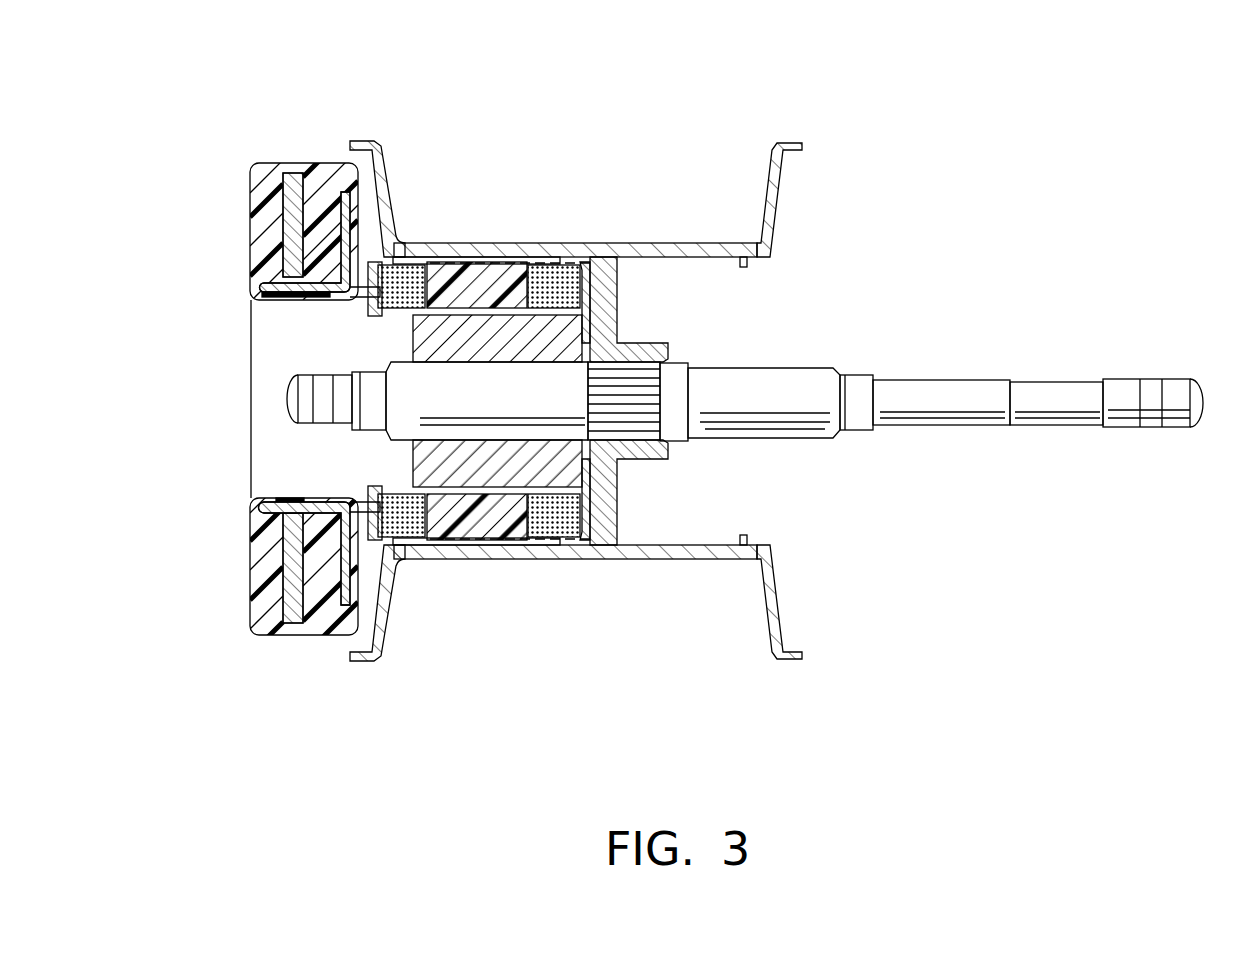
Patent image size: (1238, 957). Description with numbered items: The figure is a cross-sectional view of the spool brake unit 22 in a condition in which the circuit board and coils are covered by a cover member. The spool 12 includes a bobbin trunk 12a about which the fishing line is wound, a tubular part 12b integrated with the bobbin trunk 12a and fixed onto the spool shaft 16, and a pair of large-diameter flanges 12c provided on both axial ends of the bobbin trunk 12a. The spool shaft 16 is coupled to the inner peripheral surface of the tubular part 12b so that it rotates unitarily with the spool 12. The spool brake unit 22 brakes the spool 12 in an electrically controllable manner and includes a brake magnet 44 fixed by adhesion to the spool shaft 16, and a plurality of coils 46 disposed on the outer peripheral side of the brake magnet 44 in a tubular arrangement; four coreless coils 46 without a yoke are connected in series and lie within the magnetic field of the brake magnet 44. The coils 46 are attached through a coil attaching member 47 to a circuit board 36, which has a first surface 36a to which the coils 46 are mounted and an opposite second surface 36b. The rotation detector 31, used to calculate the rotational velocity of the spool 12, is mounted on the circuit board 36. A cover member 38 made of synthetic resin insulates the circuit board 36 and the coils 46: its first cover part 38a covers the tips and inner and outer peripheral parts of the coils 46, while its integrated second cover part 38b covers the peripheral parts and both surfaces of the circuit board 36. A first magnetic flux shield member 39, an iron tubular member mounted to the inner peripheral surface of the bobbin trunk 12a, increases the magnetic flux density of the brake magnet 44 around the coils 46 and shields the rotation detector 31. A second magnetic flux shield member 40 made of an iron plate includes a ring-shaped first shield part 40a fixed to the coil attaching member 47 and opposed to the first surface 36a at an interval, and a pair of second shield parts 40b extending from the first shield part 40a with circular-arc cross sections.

The spool 12 is at (576, 370).
The bobbin trunk 12a is at (532, 243).
The tubular part 12b is at (637, 343).
The flanges 12c is at (394, 156).
The spool shaft 16 is at (775, 368).
The spool brake unit 22 is at (687, 356).
The rotation detector 31 is at (262, 293).
The circuit board 36 is at (262, 310).
The first surface 36a is at (320, 610).
The second surface 36b is at (285, 252).
The cover member 38 is at (314, 617).
The first cover part 38a is at (545, 543).
The second cover part 38b is at (283, 640).
The first magnetic flux shield member 39 is at (458, 542).
The second magnetic flux shield member 40 is at (316, 613).
The first shield part 40a is at (355, 640).
The second shield parts 40b is at (268, 298).
The brake magnet 44 is at (413, 463).
The coils 46 is at (598, 560).
The coil attaching member 47 is at (387, 558).